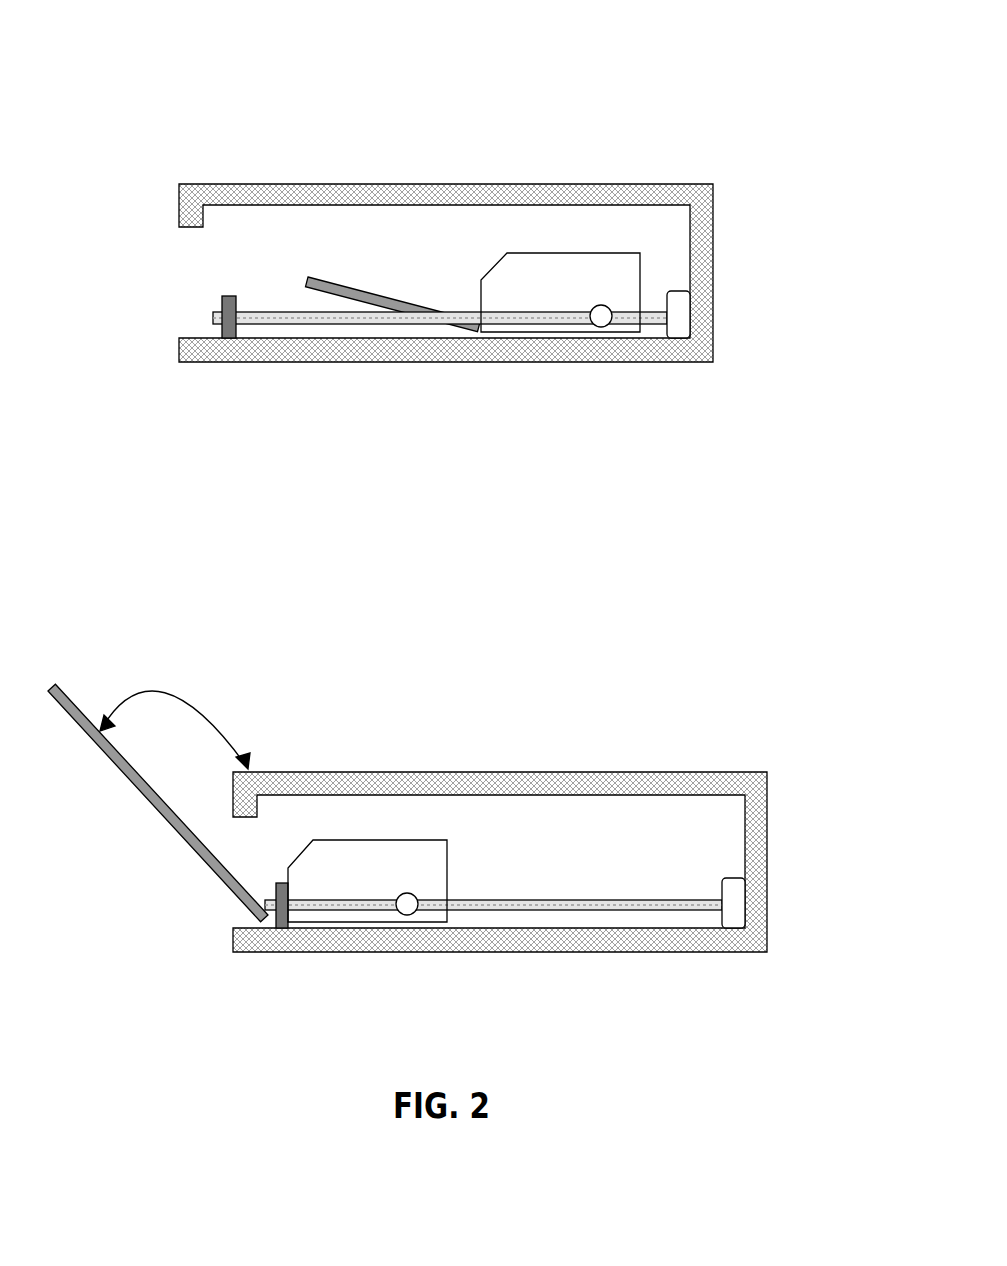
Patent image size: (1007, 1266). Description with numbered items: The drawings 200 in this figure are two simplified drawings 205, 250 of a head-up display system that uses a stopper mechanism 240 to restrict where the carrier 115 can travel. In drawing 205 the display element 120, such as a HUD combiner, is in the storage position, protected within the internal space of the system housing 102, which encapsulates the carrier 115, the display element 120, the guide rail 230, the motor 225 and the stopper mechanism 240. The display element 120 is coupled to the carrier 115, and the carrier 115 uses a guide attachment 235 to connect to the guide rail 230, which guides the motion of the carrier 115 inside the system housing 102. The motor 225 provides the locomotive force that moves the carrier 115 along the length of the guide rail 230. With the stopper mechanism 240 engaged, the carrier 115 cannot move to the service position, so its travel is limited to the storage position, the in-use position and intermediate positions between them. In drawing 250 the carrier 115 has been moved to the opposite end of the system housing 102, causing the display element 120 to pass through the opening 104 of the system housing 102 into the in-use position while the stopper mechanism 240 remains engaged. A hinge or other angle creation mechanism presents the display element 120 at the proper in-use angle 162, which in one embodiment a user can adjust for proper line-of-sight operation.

The display system 200 is at (71, 30).
The drawing 205 is at (457, 540).
The drawing 250 is at (441, 575).
The system housing 102 is at (513, 183).
The opening 104 is at (187, 288).
The carrier 115 is at (640, 253).
The display element 120 is at (382, 295).
The in-use angle 162 is at (237, 713).
The motor 225 is at (680, 318).
The guide rail 230 is at (405, 313).
The guide attachment 235 is at (600, 320).
The stopper mechanism 240 is at (260, 975).